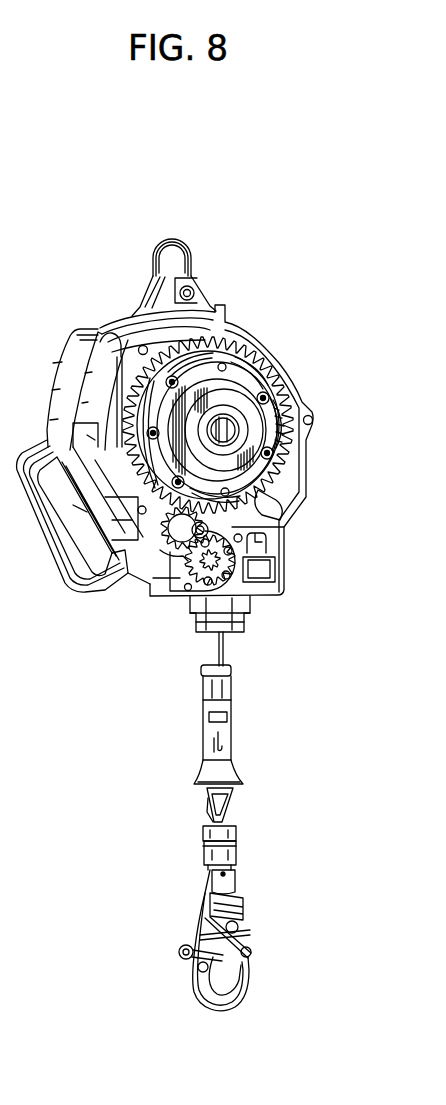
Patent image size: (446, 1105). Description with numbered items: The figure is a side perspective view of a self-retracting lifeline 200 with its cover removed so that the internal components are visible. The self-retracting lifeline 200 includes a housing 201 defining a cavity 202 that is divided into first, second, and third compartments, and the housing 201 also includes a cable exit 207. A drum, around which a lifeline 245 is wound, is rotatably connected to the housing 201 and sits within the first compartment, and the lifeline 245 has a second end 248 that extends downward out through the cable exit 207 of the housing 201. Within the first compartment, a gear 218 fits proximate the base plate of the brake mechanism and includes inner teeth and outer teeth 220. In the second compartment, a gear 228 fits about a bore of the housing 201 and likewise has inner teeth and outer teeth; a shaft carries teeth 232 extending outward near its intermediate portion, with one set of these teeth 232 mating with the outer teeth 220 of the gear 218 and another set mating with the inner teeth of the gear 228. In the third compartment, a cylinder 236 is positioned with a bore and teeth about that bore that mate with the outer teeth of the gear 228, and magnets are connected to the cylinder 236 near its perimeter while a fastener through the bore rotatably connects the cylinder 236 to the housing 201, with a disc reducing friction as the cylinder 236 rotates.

The self-retracting lifeline 200 is at (270, 247).
The housing 201 is at (125, 323).
The cavity 202 is at (288, 470).
The cable exit 207 is at (253, 615).
The gear 218 is at (258, 367).
The outer teeth 220 is at (282, 388).
The gear 228 is at (178, 554).
The teeth 232 is at (172, 516).
The cylinder 236 is at (219, 557).
The lifeline 245 is at (223, 648).
The second end 248 is at (232, 668).